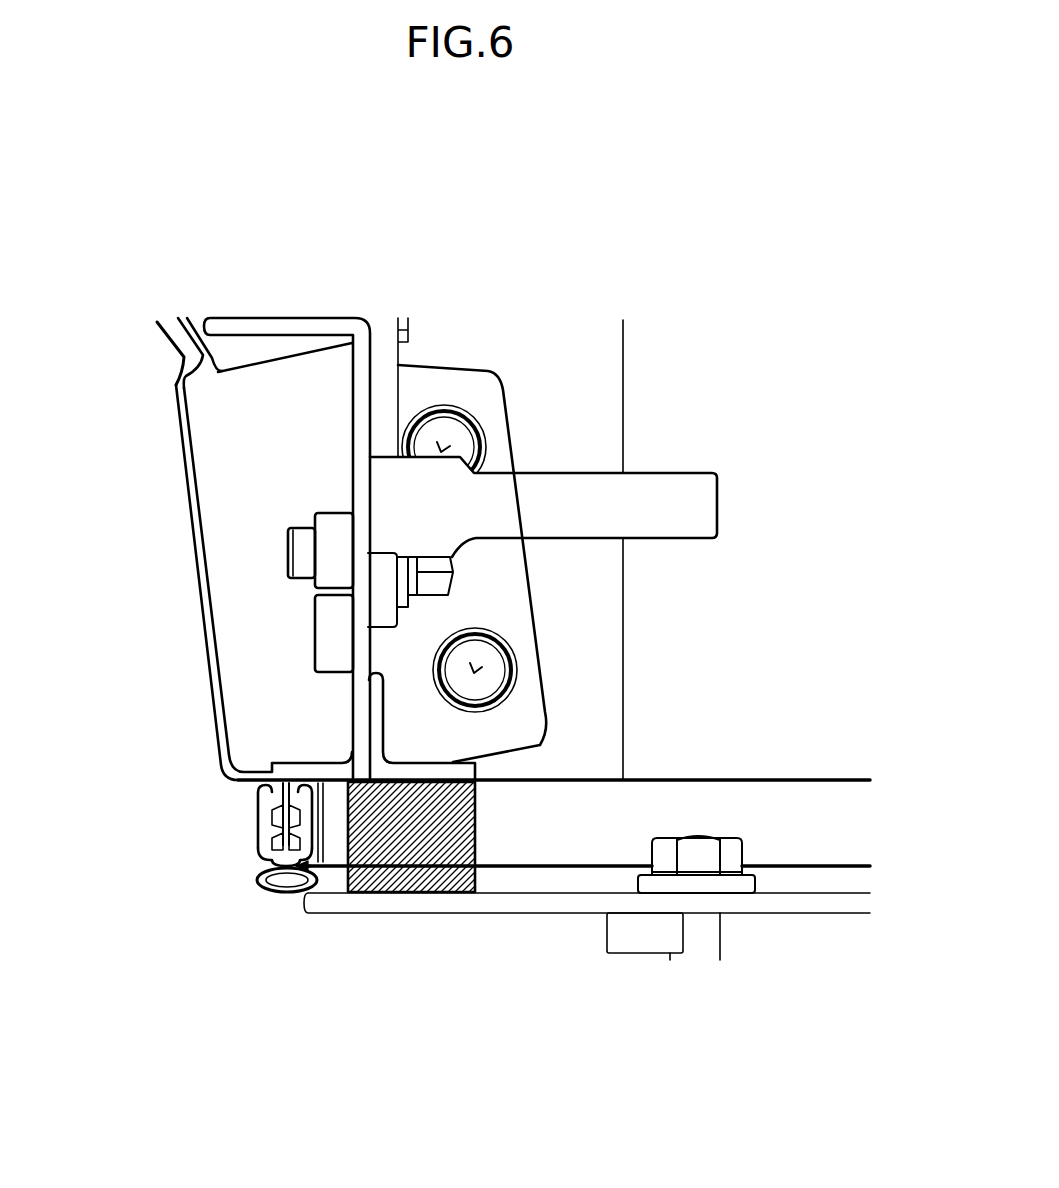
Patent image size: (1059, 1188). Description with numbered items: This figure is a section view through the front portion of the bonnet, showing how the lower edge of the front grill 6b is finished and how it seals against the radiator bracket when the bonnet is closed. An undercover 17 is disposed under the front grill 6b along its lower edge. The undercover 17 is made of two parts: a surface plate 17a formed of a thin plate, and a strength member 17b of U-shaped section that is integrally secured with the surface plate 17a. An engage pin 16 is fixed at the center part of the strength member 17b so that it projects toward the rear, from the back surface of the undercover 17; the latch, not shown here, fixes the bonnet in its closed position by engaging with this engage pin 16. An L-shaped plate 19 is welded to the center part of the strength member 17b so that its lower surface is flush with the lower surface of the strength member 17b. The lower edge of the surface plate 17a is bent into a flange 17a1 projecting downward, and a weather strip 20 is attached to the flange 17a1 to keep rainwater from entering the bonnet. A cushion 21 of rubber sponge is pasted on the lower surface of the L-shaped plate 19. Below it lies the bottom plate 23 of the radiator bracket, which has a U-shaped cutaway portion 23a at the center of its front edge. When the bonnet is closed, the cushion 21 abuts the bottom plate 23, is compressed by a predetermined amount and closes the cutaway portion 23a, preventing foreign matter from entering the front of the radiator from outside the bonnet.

The front grill 6b is at (176, 338).
The undercover 17 is at (252, 572).
The surface plate 17a is at (195, 553).
The flange 17a1 is at (270, 818).
The strength member 17b is at (370, 388).
The engage pin 16 is at (690, 483).
The L-shaped plate 19 is at (383, 735).
The weather strip 20 is at (258, 838).
The cushion 21 is at (358, 893).
The bottom plate 23 is at (533, 913).
The cutaway portion 23a is at (410, 902).